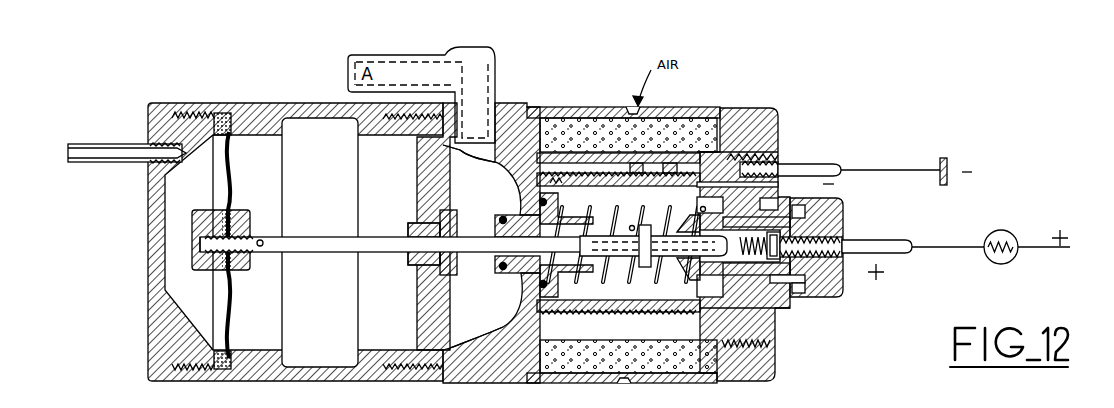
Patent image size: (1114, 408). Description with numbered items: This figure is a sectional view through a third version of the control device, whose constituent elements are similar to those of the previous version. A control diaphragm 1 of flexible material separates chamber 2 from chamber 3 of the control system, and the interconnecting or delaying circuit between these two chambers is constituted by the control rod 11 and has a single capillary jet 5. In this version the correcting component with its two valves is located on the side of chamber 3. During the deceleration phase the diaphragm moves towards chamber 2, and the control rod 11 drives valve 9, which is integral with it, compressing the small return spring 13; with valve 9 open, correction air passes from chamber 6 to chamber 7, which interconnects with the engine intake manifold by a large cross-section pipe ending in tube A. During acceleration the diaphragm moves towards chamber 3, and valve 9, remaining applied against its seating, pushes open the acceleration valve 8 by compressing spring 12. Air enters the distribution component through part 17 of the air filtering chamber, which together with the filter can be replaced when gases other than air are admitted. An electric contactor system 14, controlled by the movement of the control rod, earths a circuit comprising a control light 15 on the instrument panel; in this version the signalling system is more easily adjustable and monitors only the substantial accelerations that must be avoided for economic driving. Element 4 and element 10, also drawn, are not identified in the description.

The control diaphragm 1 is at (231, 190).
The chamber 2 is at (173, 301).
The chamber 3 is at (302, 310).
The adjusting screw 4 is at (263, 238).
The capillary jet 5 is at (198, 240).
The chamber 6 is at (603, 297).
The chamber 7 is at (464, 307).
The acceleration valve 8 is at (545, 200).
The valve 9 is at (504, 216).
The inlet tube 10 is at (91, 144).
The control rod 11 is at (327, 246).
The spring 12 is at (779, 113).
The small return spring 13 is at (624, 226).
The electric contactor system 14 is at (848, 221).
The control light 15 is at (995, 263).
The part of the air filtering chamber 17 is at (680, 108).